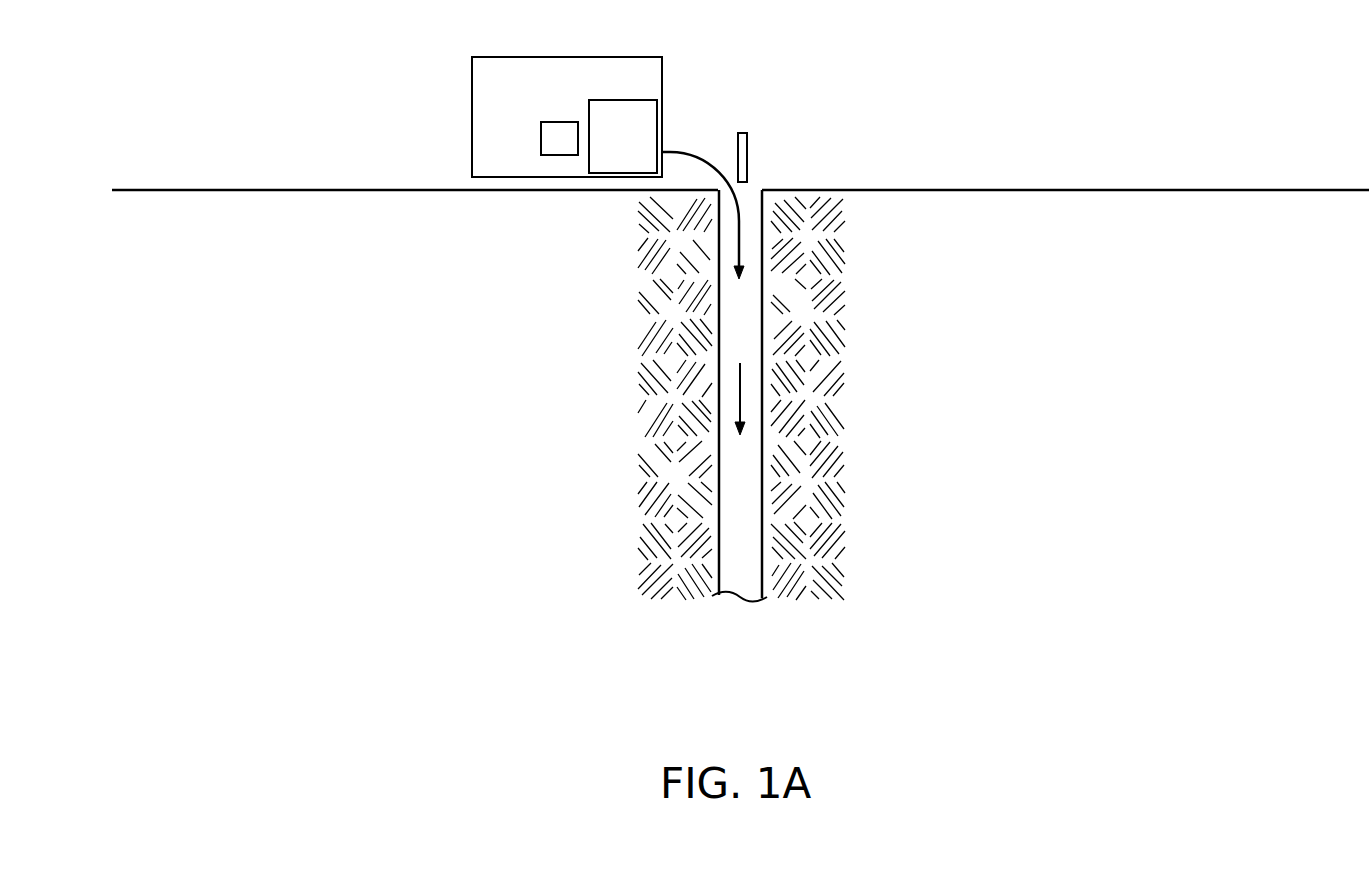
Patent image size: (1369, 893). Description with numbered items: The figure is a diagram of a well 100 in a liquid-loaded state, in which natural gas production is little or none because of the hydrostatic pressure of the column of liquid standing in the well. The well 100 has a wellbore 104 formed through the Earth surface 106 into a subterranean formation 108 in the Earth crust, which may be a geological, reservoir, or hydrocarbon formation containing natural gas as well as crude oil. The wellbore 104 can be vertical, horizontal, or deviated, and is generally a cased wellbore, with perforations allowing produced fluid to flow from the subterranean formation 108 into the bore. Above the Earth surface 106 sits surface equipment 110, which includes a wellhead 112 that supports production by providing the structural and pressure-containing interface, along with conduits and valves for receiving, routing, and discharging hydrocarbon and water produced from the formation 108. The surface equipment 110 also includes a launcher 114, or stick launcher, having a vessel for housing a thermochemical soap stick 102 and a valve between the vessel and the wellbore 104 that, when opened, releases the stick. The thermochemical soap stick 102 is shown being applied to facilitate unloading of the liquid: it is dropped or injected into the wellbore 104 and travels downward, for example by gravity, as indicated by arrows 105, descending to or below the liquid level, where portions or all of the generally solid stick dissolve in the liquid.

The well 100 is at (757, 748).
The thermochemical soap stick 102 is at (748, 142).
The wellbore 104 is at (717, 357).
The arrows 105 is at (738, 231).
The Earth surface 106 is at (170, 188).
The subterranean formation 108 is at (843, 335).
The surface equipment 110 is at (548, 56).
The wellhead 112 is at (623, 99).
The launcher 114 is at (553, 121).